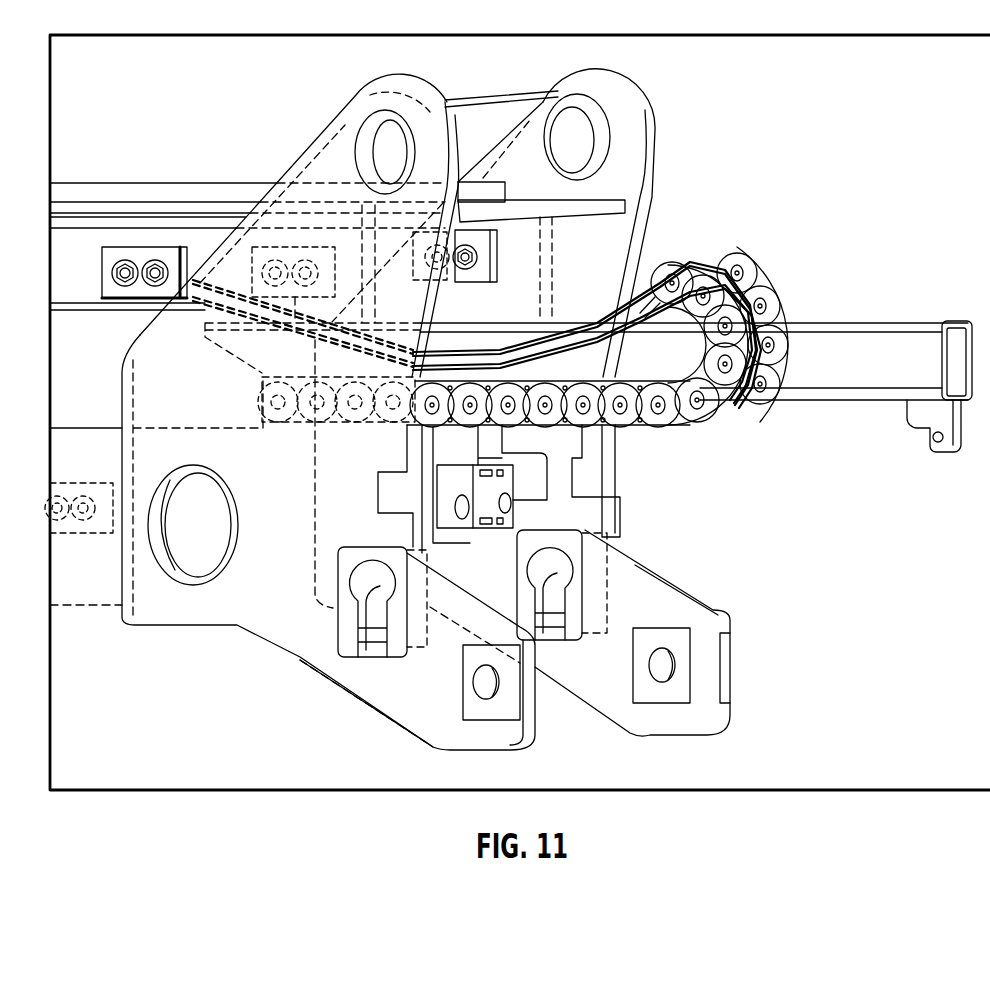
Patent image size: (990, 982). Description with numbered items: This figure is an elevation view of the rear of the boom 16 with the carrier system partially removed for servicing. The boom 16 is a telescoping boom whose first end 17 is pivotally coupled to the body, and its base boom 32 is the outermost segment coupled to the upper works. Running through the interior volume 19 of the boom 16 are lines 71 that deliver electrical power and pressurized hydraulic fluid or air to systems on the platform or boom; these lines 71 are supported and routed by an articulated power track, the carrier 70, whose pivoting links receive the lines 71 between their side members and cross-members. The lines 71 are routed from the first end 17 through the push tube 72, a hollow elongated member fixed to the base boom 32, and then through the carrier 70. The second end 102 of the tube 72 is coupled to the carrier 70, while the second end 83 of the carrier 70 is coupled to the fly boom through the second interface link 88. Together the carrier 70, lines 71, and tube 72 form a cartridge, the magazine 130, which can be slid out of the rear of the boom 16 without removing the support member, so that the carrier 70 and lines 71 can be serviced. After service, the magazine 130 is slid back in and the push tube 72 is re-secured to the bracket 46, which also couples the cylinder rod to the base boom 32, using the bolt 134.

The boom 16 is at (155, 130).
The first end 17 is at (658, 97).
The interior volume 19 is at (560, 257).
The base boom 32 is at (238, 182).
The bracket 46 is at (540, 470).
The carrier 70 is at (693, 420).
The lines 71 is at (745, 413).
The tube 72 is at (803, 392).
The second end 83 is at (783, 307).
The second interface link 88 is at (740, 263).
The second end 102 is at (905, 322).
The magazine 130 is at (850, 225).
The bolt 134 is at (930, 427).